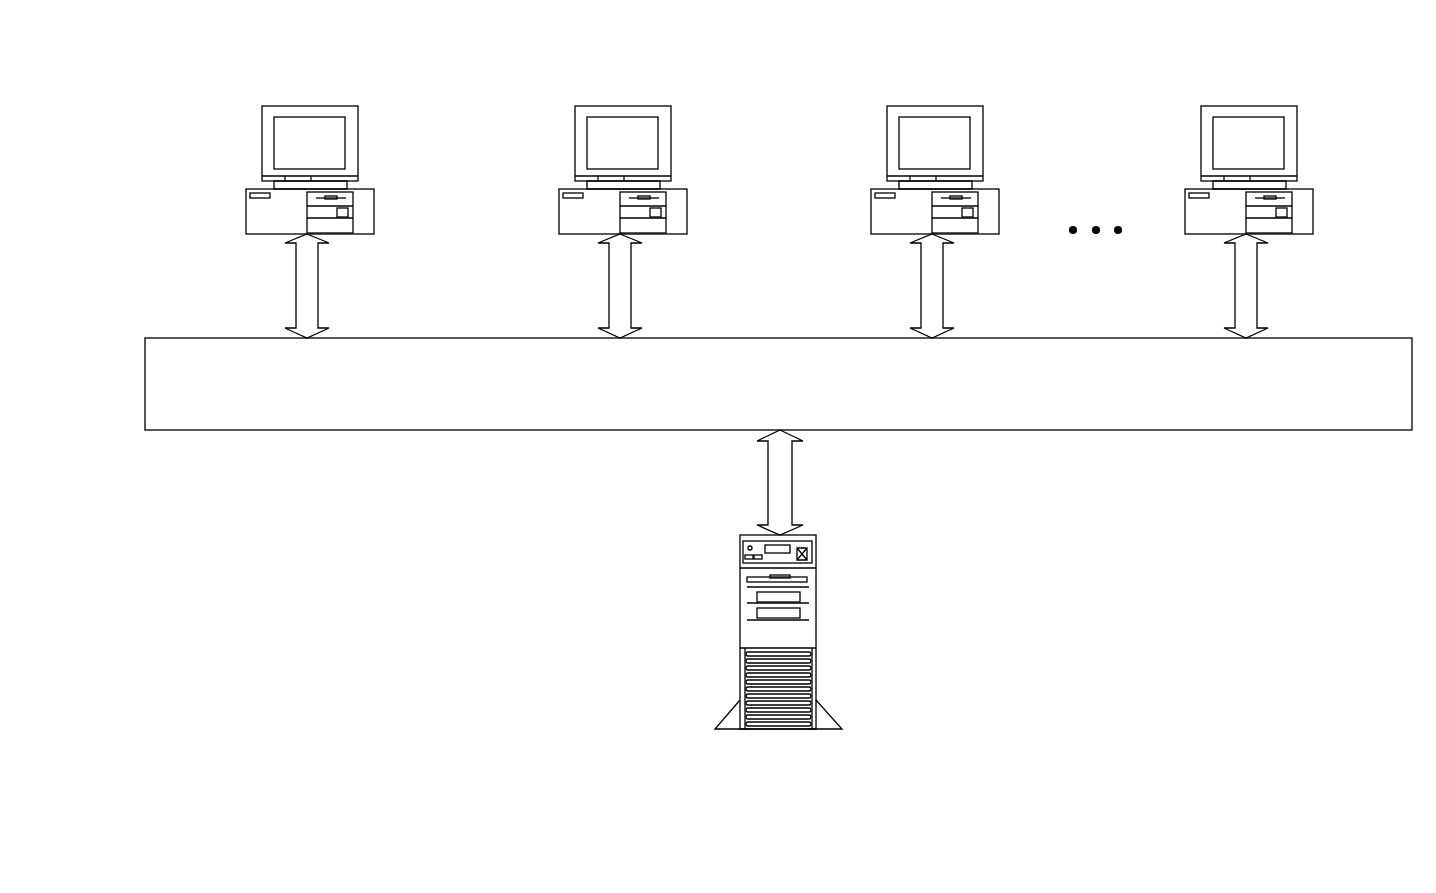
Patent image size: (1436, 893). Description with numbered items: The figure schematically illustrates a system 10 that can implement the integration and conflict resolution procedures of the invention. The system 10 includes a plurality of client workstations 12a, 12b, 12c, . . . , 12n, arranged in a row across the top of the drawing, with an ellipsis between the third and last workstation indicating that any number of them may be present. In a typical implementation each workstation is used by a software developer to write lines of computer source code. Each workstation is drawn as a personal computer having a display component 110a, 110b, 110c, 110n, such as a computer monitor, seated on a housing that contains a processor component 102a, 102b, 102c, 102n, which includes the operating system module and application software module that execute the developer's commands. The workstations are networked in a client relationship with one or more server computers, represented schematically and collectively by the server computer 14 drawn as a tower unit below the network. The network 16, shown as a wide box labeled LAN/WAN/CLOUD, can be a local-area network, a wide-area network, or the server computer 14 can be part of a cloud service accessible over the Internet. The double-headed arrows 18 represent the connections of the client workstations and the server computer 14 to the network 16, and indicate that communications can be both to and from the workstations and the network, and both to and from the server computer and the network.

The system 10 is at (246, 48).
The client workstation 12a is at (358, 155).
The client workstation 12b is at (671, 155).
The client workstation 12c is at (983, 155).
The client workstation 12n is at (1297, 155).
The display component 110a is at (323, 147).
The display component 110b is at (668, 139).
The display component 110c is at (980, 139).
The display component 110n is at (1294, 139).
The processor component 102a is at (363, 215).
The processor component 102b is at (671, 208).
The processor component 102c is at (983, 208).
The processor component 102n is at (1297, 208).
The arrows 18 is at (307, 287).
The network 16 is at (1033, 418).
The server computer 14 is at (817, 632).